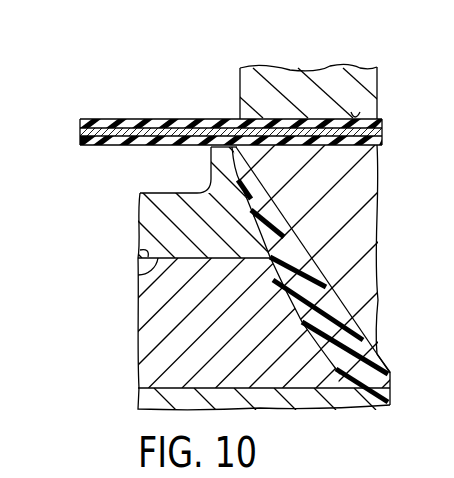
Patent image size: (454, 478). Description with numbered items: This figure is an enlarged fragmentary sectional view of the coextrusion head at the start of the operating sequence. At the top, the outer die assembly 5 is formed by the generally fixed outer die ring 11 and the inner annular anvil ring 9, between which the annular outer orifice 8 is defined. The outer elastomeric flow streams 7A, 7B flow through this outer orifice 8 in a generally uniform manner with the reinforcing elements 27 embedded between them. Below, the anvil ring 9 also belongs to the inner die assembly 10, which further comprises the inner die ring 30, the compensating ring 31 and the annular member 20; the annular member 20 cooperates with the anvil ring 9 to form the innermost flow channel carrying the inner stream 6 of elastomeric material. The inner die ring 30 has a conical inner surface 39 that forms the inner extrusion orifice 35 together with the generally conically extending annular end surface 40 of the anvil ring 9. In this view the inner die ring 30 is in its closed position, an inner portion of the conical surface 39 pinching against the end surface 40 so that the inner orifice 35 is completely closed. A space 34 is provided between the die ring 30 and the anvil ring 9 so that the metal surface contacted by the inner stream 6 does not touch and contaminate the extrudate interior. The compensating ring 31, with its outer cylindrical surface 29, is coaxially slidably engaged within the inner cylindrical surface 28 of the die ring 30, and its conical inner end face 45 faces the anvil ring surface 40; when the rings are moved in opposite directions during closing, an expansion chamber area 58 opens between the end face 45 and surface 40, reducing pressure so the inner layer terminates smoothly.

The outer die assembly 5 is at (206, 120).
The inner stream 6 is at (380, 388).
The outer flow stream 7A is at (162, 118).
The outer flow stream 7B is at (80, 147).
The annular outer orifice 8 is at (360, 112).
The inner annular anvil ring 9 is at (243, 301).
The inner die assembly 10 is at (192, 170).
The outer die ring 11 is at (297, 82).
The annular member 20 is at (147, 401).
The reinforcing elements 27 is at (117, 132).
The inner cylindrical surface 28 is at (244, 323).
The outer cylindrical surface 29 is at (140, 250).
The inner die ring 30 is at (185, 202).
The compensating ring 31 is at (132, 349).
The space 34 is at (210, 150).
The inner extrusion orifice 35 is at (238, 156).
The conical inner surface 39 is at (260, 209).
The conical annular end surface 40 is at (293, 246).
The conical inner end face 45 is at (330, 352).
The expansion chamber area 58 is at (330, 302).